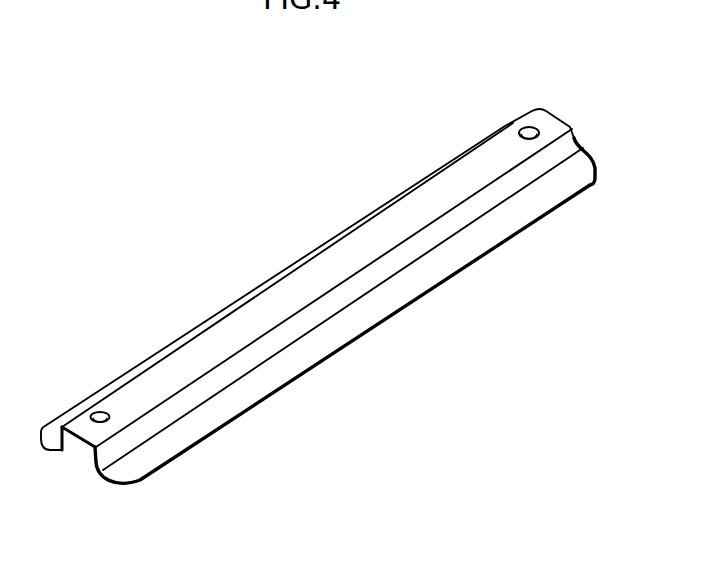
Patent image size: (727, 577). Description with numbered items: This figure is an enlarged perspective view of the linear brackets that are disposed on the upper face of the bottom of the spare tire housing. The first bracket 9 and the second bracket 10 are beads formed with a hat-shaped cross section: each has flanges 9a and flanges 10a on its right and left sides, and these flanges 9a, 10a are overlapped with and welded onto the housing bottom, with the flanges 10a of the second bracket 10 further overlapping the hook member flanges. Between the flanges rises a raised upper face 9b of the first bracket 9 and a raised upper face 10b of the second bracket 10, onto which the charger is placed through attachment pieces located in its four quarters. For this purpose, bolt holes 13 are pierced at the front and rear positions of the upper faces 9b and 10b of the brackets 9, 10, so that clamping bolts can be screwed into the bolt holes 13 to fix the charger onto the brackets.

The first bracket 9 is at (318, 270).
The second bracket 10 is at (318, 270).
The flanges 9a is at (183, 337).
The flanges 10a is at (318, 296).
The upper face 9b is at (318, 272).
The upper face 10b is at (317, 288).
The bolt holes 13 is at (100, 411).